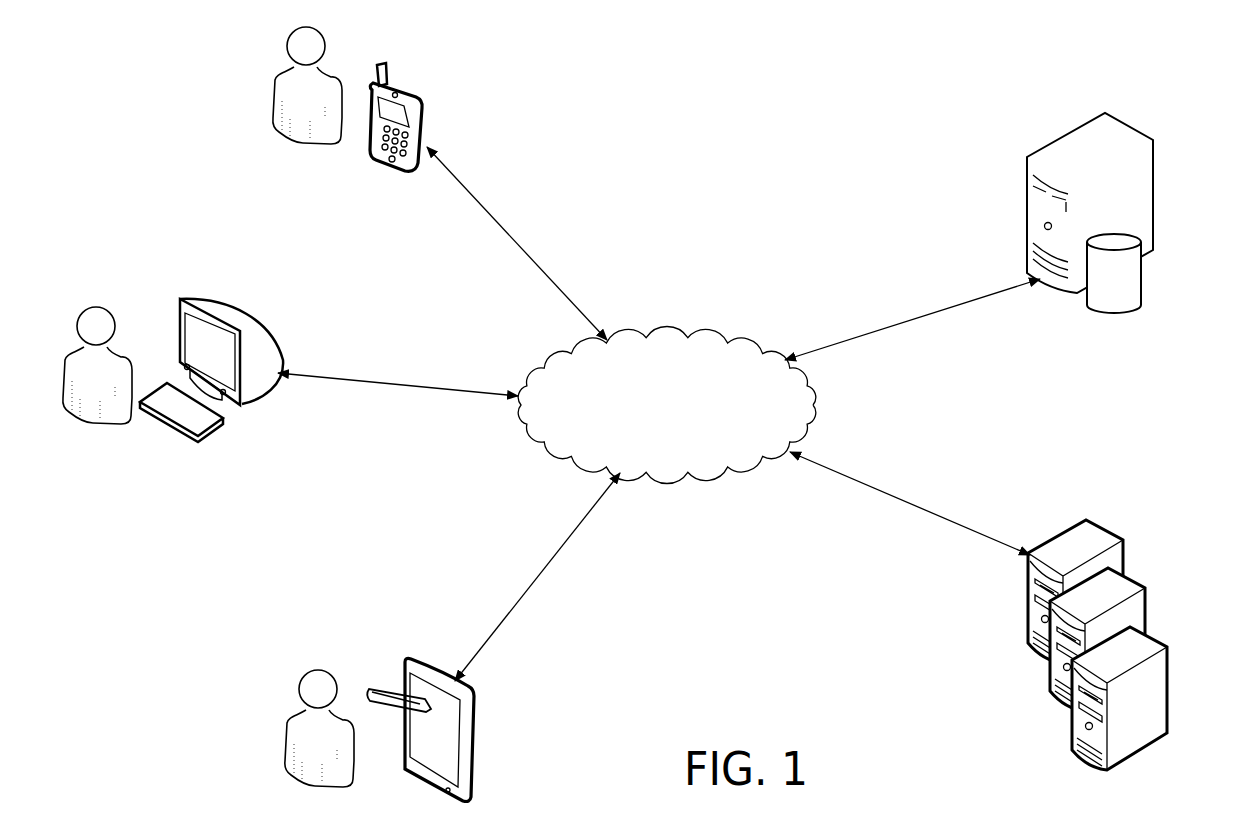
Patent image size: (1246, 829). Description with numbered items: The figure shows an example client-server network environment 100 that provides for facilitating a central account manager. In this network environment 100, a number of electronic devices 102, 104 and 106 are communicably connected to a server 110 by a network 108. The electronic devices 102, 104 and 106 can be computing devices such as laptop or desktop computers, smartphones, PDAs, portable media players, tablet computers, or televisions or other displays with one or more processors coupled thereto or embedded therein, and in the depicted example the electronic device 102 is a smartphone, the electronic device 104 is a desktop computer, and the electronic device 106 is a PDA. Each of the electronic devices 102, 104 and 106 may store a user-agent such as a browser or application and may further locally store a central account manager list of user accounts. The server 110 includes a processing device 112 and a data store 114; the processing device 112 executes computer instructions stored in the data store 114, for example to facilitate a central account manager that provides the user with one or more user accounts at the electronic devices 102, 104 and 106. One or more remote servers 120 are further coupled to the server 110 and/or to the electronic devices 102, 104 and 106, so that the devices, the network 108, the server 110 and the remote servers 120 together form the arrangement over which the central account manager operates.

The network environment 100 is at (786, 82).
The electronic device 102 is at (408, 86).
The electronic device 104 is at (245, 310).
The electronic device 106 is at (414, 655).
The network 108 is at (668, 334).
The server 110 is at (1031, 310).
The processing device 112 is at (1128, 123).
The data store 114 is at (1140, 292).
The remote servers 120 is at (1027, 727).